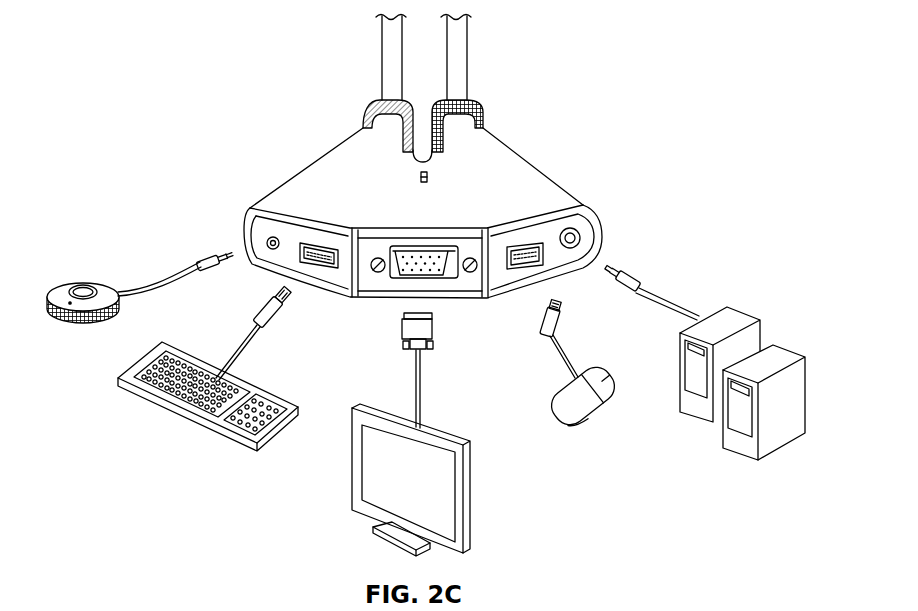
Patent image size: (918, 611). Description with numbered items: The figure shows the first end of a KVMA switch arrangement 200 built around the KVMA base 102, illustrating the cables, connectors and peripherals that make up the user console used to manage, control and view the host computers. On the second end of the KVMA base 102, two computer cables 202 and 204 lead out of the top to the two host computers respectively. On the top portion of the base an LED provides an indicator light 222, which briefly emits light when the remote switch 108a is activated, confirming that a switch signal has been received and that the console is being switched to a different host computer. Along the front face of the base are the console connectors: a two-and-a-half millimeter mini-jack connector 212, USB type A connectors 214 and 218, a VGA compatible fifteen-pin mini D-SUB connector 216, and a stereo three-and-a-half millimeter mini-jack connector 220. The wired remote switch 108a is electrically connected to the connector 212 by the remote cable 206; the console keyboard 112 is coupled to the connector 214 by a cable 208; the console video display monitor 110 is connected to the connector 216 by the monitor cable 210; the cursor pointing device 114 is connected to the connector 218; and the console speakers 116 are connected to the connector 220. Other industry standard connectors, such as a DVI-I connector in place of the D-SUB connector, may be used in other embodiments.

The computer system 200 is at (204, 55).
The KVMA base 102 is at (530, 168).
The computer cable 202 is at (387, 57).
The computer cable 204 is at (457, 57).
The indicator light 222 is at (420, 177).
The connector 212 is at (267, 242).
The connector 214 is at (320, 270).
The connector 216 is at (393, 277).
The connector 218 is at (522, 270).
The connector 220 is at (582, 237).
The remote switch 108a is at (74, 326).
The remote cable 206 is at (165, 279).
The cable 208 is at (245, 336).
The monitor cable 210 is at (412, 368).
The console video display monitor 110 is at (477, 513).
The console keyboard 112 is at (177, 412).
The cursor pointing device 114 is at (597, 408).
The console speakers 116 is at (777, 440).